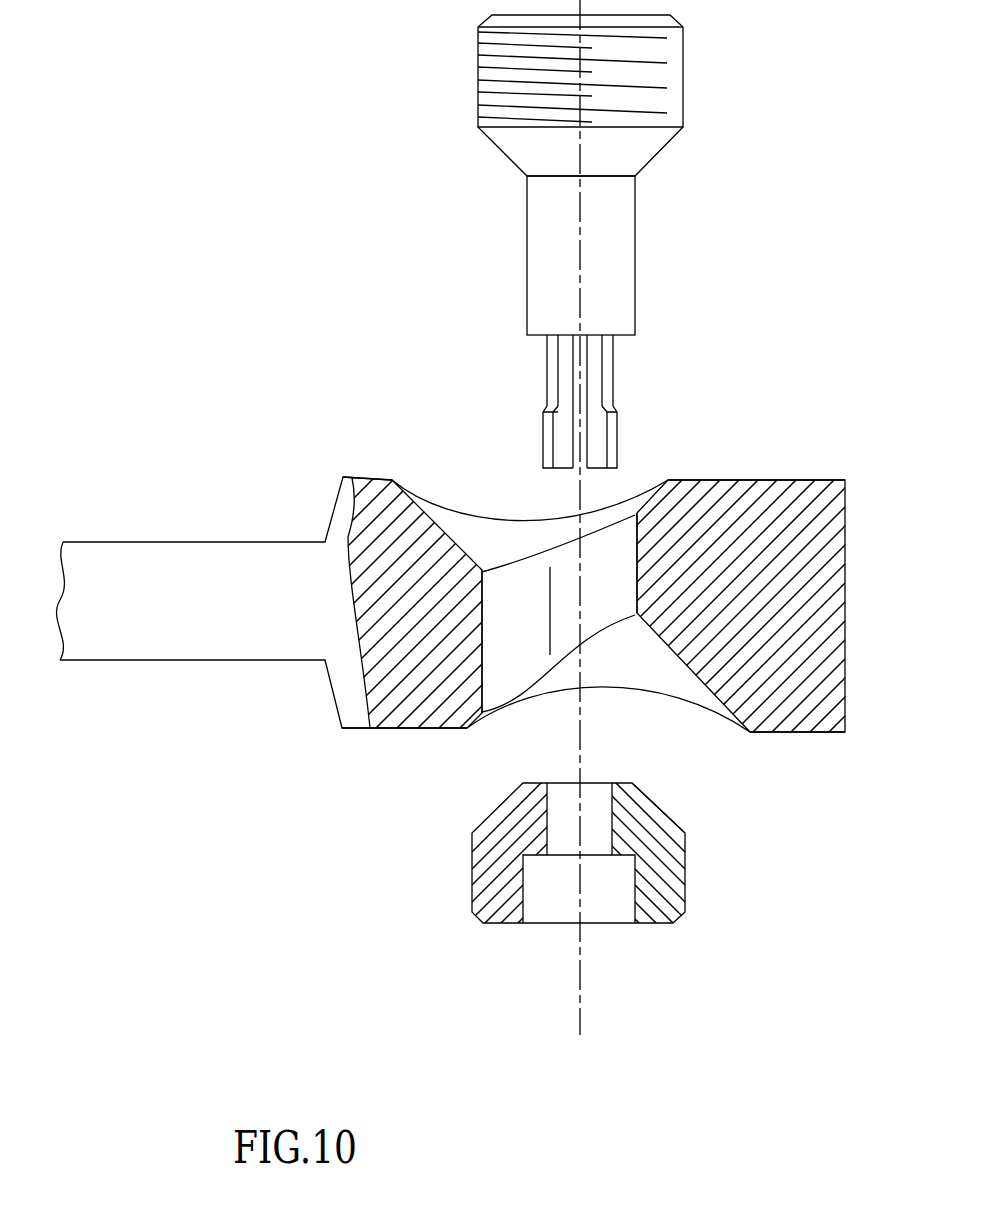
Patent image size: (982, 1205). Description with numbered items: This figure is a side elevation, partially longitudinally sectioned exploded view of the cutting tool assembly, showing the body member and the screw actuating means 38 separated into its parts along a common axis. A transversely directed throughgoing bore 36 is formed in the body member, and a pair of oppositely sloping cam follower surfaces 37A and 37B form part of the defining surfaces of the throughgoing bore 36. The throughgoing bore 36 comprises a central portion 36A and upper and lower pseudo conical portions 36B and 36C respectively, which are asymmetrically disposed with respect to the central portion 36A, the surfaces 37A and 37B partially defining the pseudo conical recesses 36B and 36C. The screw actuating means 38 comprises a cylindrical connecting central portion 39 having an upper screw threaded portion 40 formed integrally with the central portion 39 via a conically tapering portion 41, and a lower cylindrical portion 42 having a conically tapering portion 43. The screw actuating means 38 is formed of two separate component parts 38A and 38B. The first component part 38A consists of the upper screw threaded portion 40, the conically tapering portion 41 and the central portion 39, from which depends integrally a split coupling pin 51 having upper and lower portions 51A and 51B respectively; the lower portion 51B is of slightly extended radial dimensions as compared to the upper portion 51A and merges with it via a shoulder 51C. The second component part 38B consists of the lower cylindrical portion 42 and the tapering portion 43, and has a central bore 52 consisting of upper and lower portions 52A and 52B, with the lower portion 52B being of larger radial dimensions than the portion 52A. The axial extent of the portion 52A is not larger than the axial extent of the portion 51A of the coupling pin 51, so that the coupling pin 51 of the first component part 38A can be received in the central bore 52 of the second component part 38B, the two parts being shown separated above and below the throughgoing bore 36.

The throughgoing bore 36 is at (411, 462).
The central portion 36A is at (631, 588).
The upper pseudo conical portion 36B is at (527, 552).
The lower pseudo conical portion 36C is at (648, 677).
The cam follower surface 37A is at (650, 485).
The cam follower surface 37B is at (473, 722).
The screw actuating means 38 is at (432, 92).
The first component part 38A is at (496, 194).
The second component part 38B is at (436, 835).
The central portion 39 is at (622, 258).
The upper screw threaded portion 40 is at (685, 72).
The conically tapering portion 41 is at (645, 147).
The lower cylindrical portion 42 is at (687, 883).
The conically tapering portion 43 is at (658, 808).
The split coupling pin 51 is at (638, 373).
The upper portion 51A is at (550, 367).
The lower portion 51B is at (547, 440).
The shoulder 51C is at (547, 410).
The central bore 52 is at (611, 756).
The upper portion 52A is at (564, 808).
The lower portion 52B is at (550, 897).